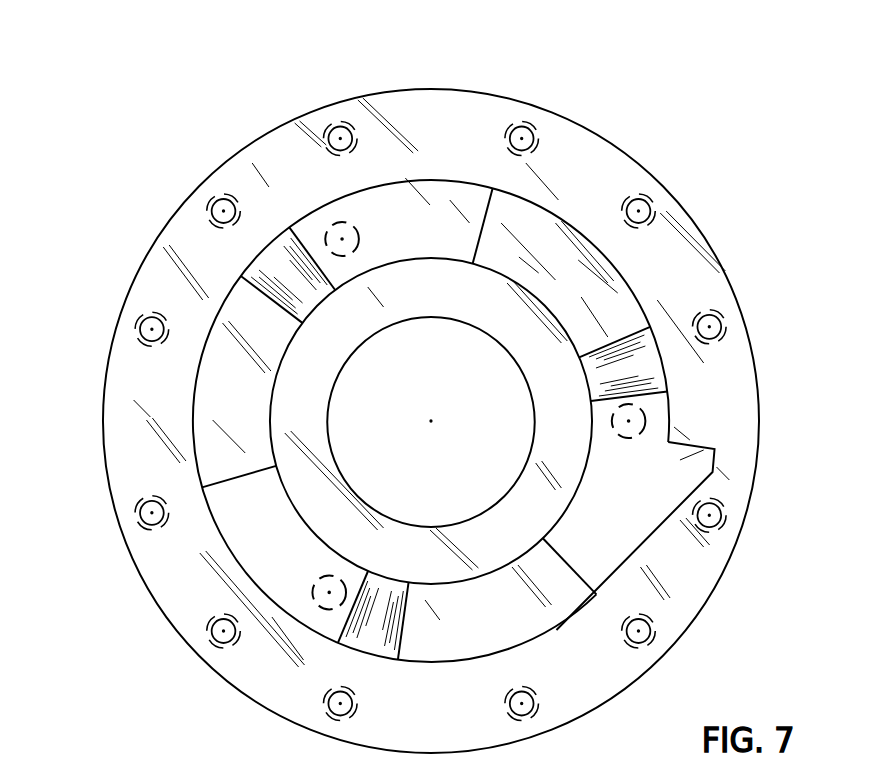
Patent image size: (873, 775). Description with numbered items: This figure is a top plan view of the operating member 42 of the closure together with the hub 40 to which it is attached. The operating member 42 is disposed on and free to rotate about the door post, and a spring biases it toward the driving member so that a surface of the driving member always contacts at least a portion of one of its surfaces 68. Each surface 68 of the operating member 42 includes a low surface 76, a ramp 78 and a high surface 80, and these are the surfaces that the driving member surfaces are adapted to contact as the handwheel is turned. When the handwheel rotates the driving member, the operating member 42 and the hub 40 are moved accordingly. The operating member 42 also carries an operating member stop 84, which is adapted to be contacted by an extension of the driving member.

The hub 40 is at (550, 120).
The operating member 42 is at (405, 168).
The surfaces of operating member 68 is at (575, 215).
The low surface 76 is at (620, 287).
The ramp 78 is at (263, 278).
The high surface 80 is at (373, 223).
The operating member stop 84 is at (683, 462).